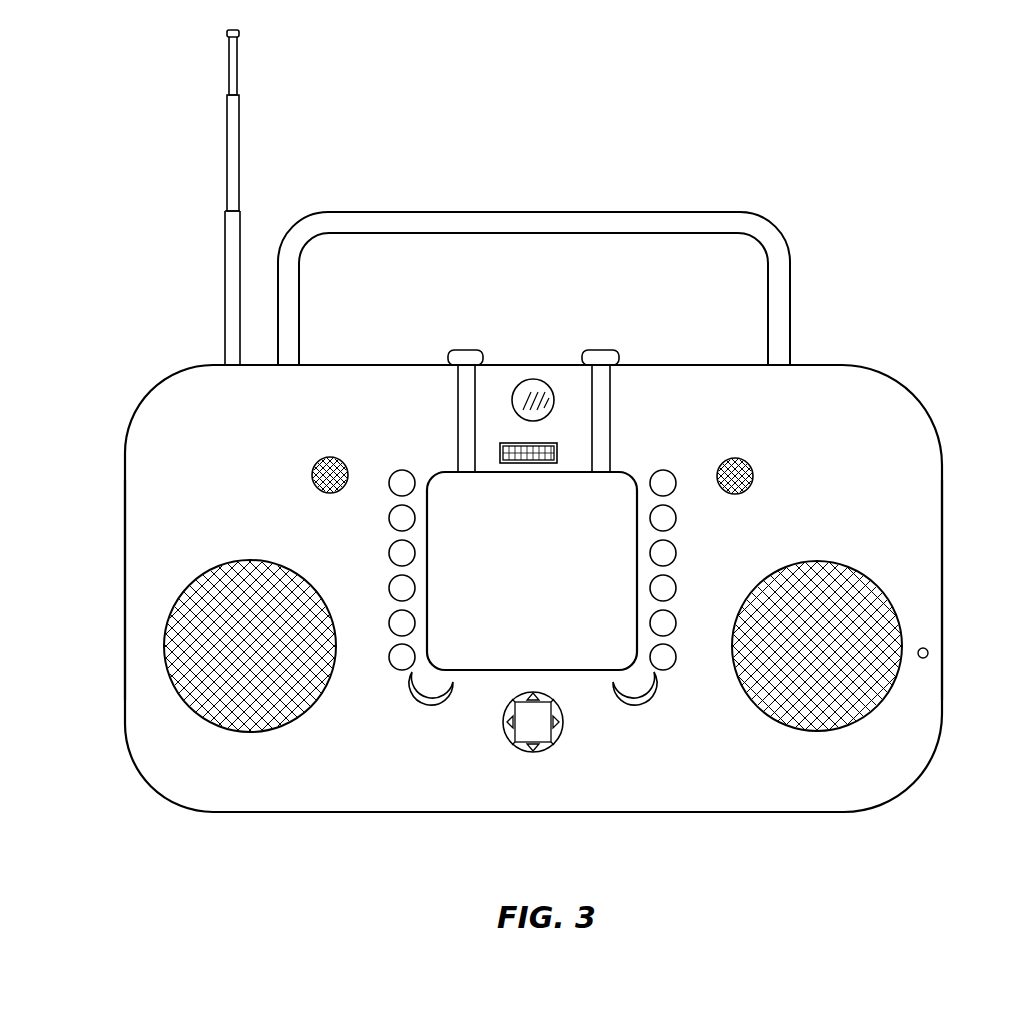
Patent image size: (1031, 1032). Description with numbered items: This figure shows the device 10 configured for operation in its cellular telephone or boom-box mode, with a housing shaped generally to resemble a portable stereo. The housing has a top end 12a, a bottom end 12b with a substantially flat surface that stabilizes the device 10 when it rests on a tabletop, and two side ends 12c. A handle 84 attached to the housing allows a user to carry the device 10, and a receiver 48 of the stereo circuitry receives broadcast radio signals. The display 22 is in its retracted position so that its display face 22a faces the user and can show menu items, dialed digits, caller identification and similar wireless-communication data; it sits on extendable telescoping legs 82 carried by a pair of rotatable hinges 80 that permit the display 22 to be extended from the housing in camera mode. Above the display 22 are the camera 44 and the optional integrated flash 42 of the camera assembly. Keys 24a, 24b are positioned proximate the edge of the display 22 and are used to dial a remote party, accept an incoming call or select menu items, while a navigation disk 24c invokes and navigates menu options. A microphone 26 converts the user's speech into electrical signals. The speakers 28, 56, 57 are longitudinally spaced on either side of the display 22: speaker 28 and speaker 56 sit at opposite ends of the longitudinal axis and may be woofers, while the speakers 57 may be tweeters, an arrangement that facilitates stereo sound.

The device 10 is at (822, 130).
The top end 12a is at (838, 365).
The bottom end 12b is at (757, 812).
The side ends 12c is at (942, 505).
The display 22 is at (620, 466).
The display face 22a is at (615, 551).
The keys 24a is at (389, 623).
The keys 24b is at (415, 700).
The navigation disk 24c is at (526, 748).
The microphone 26 is at (927, 648).
The speaker 28 is at (225, 731).
The flash 42 is at (544, 443).
The camera 44 is at (523, 380).
The receiver 48 is at (228, 118).
The speaker 56 is at (808, 731).
The speakers 57 is at (318, 459).
The rotatable hinges 80 is at (478, 350).
The extendable telescoping legs 82 is at (458, 412).
The handle 84 is at (781, 293).